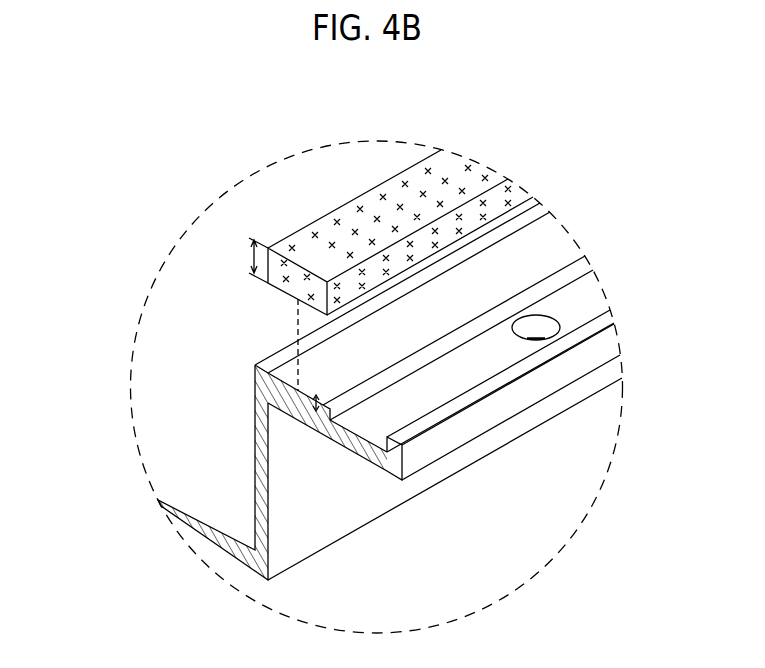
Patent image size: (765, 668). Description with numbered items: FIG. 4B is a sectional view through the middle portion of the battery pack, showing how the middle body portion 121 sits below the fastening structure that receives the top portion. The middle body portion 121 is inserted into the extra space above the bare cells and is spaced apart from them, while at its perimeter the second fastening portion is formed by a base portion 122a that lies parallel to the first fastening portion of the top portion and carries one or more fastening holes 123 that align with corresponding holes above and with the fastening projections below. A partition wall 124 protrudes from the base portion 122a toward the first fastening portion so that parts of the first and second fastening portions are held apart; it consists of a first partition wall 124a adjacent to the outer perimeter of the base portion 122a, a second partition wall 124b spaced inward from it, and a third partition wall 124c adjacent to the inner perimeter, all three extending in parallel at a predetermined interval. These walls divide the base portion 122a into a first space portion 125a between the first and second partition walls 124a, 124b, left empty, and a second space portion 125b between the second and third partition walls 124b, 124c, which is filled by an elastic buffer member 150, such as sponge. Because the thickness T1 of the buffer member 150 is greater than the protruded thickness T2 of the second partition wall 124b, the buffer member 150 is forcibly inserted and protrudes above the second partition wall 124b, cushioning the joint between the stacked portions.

The middle body portion 121 is at (205, 523).
The base portion 122a is at (537, 388).
The fastening holes 123 is at (540, 328).
The partition wall 124 is at (447, 98).
The first partition wall 124a is at (430, 424).
The second partition wall 124b is at (373, 390).
The third partition wall 124c is at (320, 334).
The first space portion 125a is at (583, 303).
The second space portion 125b is at (548, 256).
The buffer member 150 is at (278, 288).
The thickness of the buffer member T1 is at (249, 260).
The protruded thickness of the second partition wall T2 is at (312, 403).